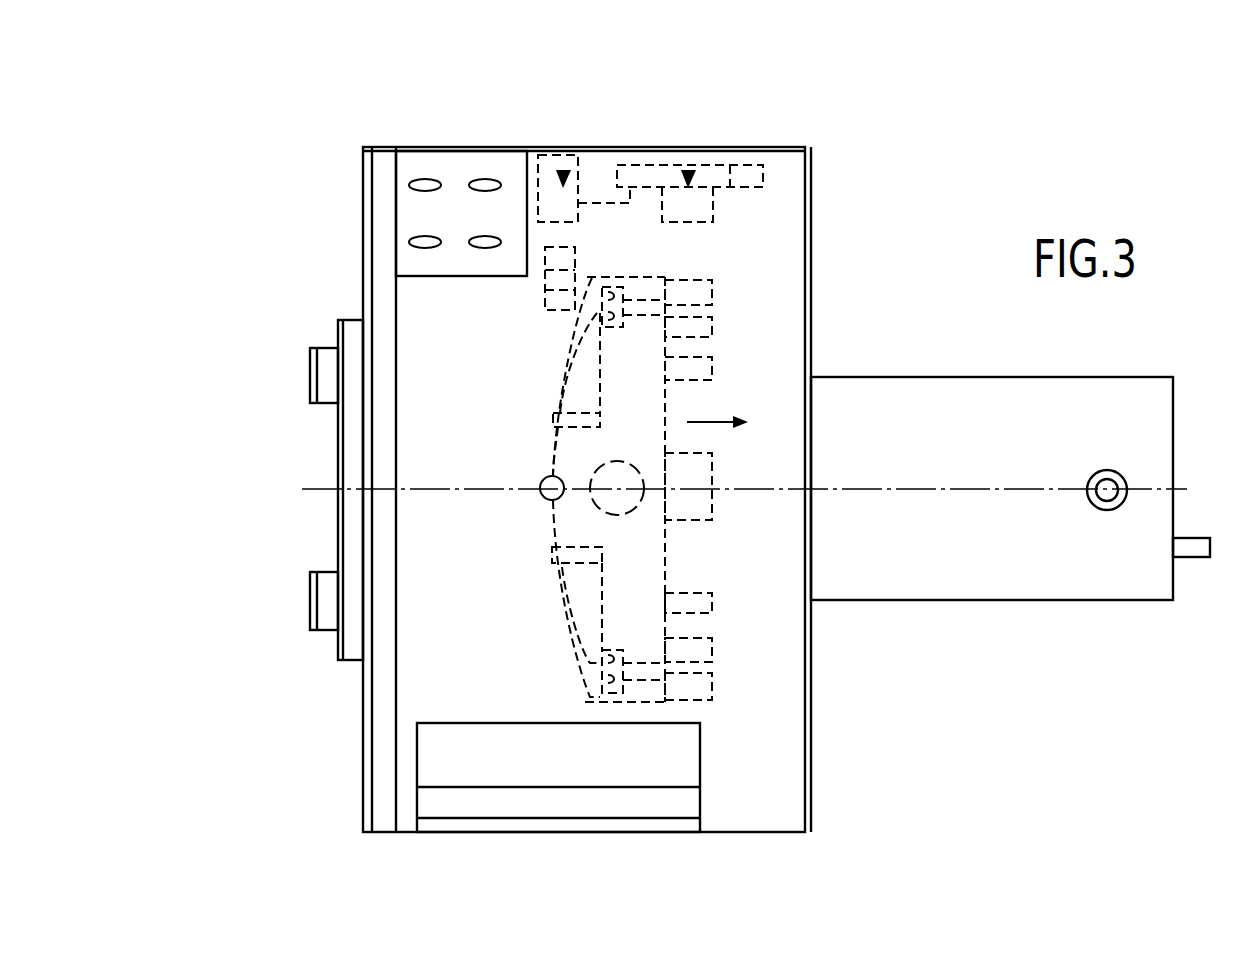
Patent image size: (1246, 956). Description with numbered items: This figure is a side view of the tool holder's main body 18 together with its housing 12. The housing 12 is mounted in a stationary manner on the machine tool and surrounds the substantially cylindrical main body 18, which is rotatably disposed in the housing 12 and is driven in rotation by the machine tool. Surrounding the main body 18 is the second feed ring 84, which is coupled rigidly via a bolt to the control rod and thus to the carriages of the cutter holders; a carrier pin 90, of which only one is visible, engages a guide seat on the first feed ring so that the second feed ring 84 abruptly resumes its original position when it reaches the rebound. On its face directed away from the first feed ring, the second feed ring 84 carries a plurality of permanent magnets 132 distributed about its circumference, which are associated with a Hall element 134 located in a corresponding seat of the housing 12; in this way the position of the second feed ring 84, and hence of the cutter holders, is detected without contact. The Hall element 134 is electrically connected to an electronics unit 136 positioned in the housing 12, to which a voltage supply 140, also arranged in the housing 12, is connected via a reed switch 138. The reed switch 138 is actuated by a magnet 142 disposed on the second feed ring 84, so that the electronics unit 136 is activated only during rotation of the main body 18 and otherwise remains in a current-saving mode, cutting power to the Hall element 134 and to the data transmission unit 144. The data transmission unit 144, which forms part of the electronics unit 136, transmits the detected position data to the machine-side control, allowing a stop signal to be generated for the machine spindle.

The housing 12 is at (826, 332).
The main body 18 is at (318, 423).
The second feed ring 84 is at (640, 650).
The carrier pin 90 is at (612, 705).
The permanent magnets 132 is at (706, 271).
The Hall element 134 is at (689, 172).
The electronics unit 136 is at (635, 165).
The reed switch 138 is at (575, 155).
The voltage supply 140 is at (562, 172).
The magnet 142 is at (545, 273).
The data transmission unit 144 is at (748, 163).